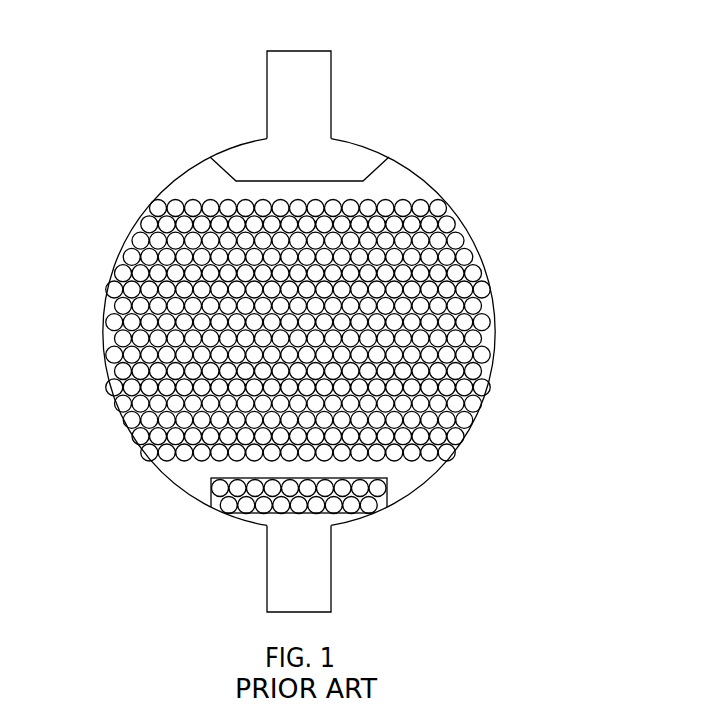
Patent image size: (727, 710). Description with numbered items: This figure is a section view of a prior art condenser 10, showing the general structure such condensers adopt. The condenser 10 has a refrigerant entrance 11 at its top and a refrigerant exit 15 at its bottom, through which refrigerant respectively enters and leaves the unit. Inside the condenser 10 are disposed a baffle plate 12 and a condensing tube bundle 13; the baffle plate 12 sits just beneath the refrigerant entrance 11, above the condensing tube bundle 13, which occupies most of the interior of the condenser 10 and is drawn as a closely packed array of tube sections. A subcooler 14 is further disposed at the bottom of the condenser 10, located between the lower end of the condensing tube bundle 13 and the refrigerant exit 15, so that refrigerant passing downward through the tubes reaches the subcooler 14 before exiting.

The condenser 10 is at (145, 147).
The refrigerant entrance 11 is at (320, 50).
The baffle plate 12 is at (341, 181).
The condensing tube bundle 13 is at (455, 238).
The subcooler 14 is at (370, 514).
The refrigerant exit 15 is at (298, 590).